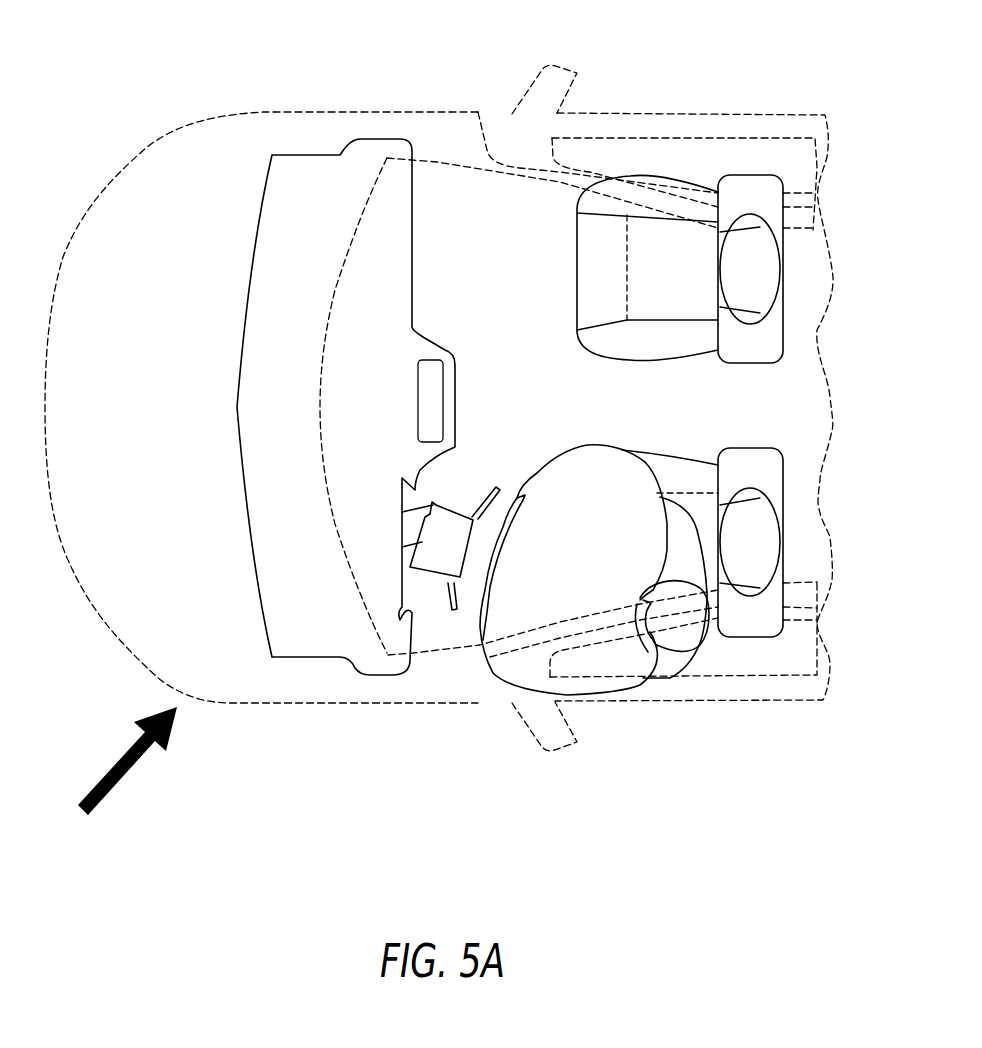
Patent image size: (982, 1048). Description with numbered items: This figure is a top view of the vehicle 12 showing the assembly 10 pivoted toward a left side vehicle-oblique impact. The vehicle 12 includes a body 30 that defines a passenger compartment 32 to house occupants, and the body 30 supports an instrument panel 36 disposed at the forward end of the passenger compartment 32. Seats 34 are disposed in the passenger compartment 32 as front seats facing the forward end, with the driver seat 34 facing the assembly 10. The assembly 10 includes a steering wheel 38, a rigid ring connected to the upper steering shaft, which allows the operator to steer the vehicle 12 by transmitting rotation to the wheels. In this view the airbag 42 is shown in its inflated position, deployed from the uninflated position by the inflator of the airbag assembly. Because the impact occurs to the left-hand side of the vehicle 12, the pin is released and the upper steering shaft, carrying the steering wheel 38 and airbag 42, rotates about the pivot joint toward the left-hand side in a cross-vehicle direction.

The assembly 10 is at (480, 437).
The vehicle 12 is at (775, 52).
The body 30 is at (399, 102).
The passenger compartment 32 is at (770, 408).
The seat 34 is at (770, 272).
The instrument panel 36 is at (413, 253).
The steering wheel 38 is at (517, 498).
The airbag 42 is at (585, 467).